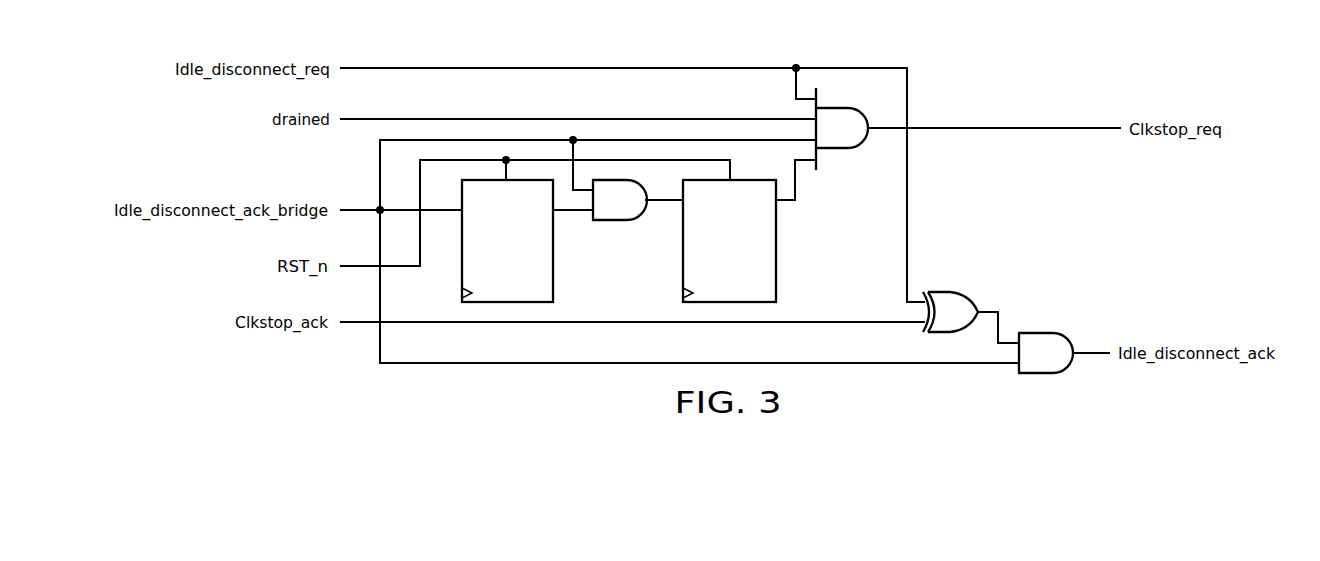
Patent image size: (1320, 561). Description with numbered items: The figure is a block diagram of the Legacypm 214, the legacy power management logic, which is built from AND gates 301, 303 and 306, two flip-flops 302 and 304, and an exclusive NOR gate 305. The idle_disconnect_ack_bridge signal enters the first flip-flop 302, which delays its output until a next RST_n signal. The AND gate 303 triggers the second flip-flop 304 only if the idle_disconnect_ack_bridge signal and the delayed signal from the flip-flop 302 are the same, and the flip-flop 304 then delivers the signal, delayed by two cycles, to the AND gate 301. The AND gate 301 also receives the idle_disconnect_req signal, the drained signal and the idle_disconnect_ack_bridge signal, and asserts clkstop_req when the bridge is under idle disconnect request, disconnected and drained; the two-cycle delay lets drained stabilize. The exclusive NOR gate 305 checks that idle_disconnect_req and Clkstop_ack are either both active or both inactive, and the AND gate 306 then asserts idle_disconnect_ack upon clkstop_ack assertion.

The Legacypm 214 is at (1001, 76).
The AND gate 301 is at (842, 151).
The flip-flop 302 is at (488, 253).
The AND gate 303 is at (611, 222).
The flip-flop 304 is at (712, 253).
The exclusive NOR gate 305 is at (950, 291).
The AND gate 306 is at (1043, 375).